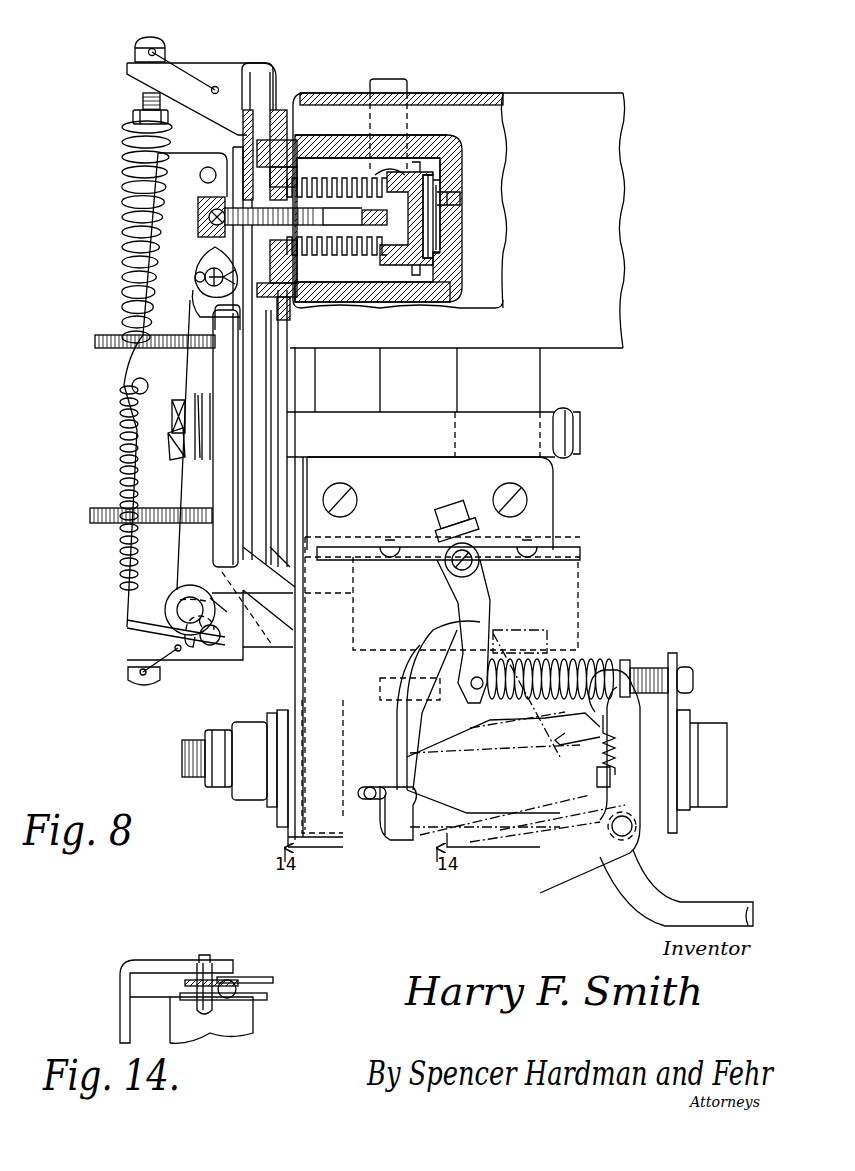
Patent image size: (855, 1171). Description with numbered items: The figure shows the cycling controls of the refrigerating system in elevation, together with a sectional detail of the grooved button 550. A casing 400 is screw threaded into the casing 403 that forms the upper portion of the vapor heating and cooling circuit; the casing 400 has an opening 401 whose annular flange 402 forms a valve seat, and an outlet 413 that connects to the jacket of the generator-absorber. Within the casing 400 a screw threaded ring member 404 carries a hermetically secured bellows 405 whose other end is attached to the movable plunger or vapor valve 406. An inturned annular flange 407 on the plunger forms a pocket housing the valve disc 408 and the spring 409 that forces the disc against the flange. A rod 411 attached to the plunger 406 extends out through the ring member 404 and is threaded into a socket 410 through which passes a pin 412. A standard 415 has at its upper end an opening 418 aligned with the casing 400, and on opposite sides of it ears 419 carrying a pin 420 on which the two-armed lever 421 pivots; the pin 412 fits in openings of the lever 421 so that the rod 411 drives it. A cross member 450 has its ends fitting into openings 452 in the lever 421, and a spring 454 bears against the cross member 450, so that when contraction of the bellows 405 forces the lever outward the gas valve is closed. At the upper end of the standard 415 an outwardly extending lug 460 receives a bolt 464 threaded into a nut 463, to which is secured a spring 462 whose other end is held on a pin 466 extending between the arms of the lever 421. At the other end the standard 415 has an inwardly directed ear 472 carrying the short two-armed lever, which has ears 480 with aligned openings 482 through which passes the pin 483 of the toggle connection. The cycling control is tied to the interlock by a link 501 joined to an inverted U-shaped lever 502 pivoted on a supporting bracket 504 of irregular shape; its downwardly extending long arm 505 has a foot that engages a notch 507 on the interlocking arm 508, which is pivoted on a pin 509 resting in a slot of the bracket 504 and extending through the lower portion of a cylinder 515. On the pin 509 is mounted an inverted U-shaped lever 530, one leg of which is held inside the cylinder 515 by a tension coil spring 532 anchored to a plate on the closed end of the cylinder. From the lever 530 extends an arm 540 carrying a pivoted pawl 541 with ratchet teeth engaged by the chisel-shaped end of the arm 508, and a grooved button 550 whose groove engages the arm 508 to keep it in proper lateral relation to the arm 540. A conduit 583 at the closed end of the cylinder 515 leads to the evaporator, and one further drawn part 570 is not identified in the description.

In FIG. 8, the casing 400 is at (383, 140).
In FIG. 8, the opening 401 is at (450, 200).
In FIG. 8, the annular flange 402 is at (452, 202).
In FIG. 8, the casing 403 is at (368, 92).
In FIG. 8, the ring member 404 is at (300, 165).
In FIG. 8, the diaphragm or bellows 405 is at (357, 255).
In FIG. 8, the movable plunger or vapor valve 406 is at (423, 262).
In FIG. 8, the inturned annular flange 407 is at (430, 258).
In FIG. 8, the valve disc 408 is at (433, 222).
In FIG. 8, the spring 409 is at (433, 240).
In FIG. 8, the socket 410 is at (305, 240).
In FIG. 8, the rod 411 is at (330, 212).
In FIG. 8, the pin 412 is at (206, 205).
In FIG. 8, the outlet 413 is at (400, 90).
In FIG. 8, the standard 415 is at (270, 88).
In FIG. 8, the opening 418 is at (237, 150).
In FIG. 8, the ears 419 is at (210, 255).
In FIG. 8, the pin 420 is at (200, 290).
In FIG. 8, the lever 421 is at (145, 420).
In FIG. 8, the cross member 450 is at (172, 398).
In FIG. 8, the openings 452 is at (175, 456).
In FIG. 8, the spring 454 is at (200, 460).
In FIG. 8, the lug 460 is at (207, 72).
In FIG. 8, the spring 462 is at (125, 185).
In FIG. 8, the nut 463 is at (133, 116).
In FIG. 8, the bolt 464 is at (140, 92).
In FIG. 8, the pin 466 is at (132, 385).
In FIG. 8, the ear 472 is at (240, 590).
In FIG. 8, the ears 480 is at (220, 645).
In FIG. 8, the openings 482 is at (190, 643).
In FIG. 8, the pin 483 is at (206, 648).
In FIG. 8, the link 501 is at (248, 618).
In FIG. 8, the inverted U-shaped lever 502 is at (493, 540).
In FIG. 14, the supporting bracket 504 is at (120, 968).
In FIG. 8, the long arm 505 is at (423, 667).
In FIG. 8, the notch 507 is at (585, 740).
In FIG. 8, the interlocking arm 508 is at (445, 740).
In FIG. 14, the interlocking arm 508 is at (262, 980).
In FIG. 8, the pin 509 is at (370, 803).
In FIG. 14, the pin 509 is at (213, 940).
In FIG. 8, the cylinder 515 is at (655, 817).
In FIG. 14, the cylinder 515 is at (210, 1025).
In FIG. 8, the inverted U-shaped lever 530 is at (283, 803).
In FIG. 8, the tension coil spring 532 is at (567, 668).
In FIG. 8, the arm 540 is at (435, 827).
In FIG. 14, the arm 540 is at (270, 997).
In FIG. 8, the pawl 541 is at (565, 865).
In FIG. 14, the grooved button 550 is at (225, 978).
In FIG. 8, the link 570 is at (492, 612).
In FIG. 8, the conduit 583 is at (655, 902).